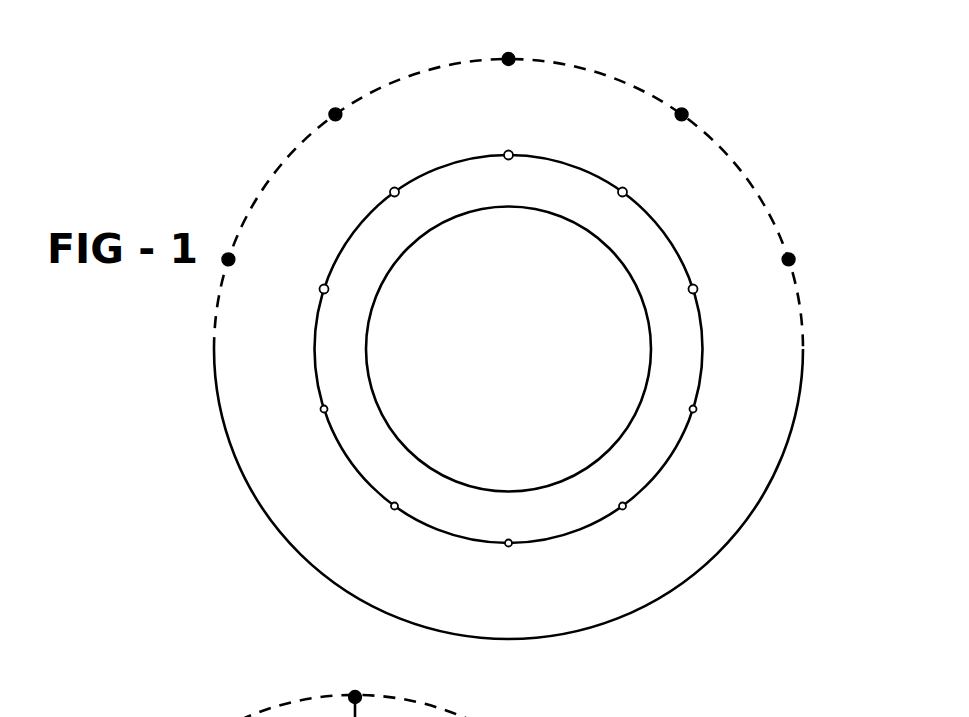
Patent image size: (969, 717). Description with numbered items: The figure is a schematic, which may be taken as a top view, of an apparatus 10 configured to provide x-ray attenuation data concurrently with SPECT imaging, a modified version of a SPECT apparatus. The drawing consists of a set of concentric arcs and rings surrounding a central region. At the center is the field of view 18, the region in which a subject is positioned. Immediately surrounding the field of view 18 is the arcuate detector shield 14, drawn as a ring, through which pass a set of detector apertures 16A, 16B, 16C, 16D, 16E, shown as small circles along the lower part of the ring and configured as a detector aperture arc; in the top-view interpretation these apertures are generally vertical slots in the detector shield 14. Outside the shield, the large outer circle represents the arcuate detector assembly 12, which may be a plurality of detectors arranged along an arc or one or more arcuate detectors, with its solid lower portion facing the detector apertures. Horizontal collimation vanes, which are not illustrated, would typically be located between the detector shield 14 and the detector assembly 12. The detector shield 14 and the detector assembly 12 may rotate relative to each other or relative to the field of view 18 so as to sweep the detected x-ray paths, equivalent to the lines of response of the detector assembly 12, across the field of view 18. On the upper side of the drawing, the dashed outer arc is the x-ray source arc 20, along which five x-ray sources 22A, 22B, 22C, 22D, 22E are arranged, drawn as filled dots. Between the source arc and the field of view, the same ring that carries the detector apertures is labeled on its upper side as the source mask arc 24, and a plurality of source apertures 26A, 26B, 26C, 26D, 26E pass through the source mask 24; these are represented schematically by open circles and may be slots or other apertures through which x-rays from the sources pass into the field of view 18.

The apparatus 10 is at (262, 99).
The arcuate detector assembly 12 is at (735, 540).
The arcuate detector shield 14 is at (458, 538).
The detector aperture 16A is at (321, 412).
The detector aperture 16B is at (392, 507).
The detector aperture 16C is at (510, 546).
The detector aperture 16D is at (624, 509).
The detector aperture 16E is at (696, 412).
The field of view 18 is at (405, 450).
The x-ray source arc 20 is at (590, 70).
The x-ray source 22A is at (228, 257).
The x-ray source 22B is at (335, 112).
The x-ray source 22C is at (509, 57).
The x-ray source 22D is at (683, 113).
The x-ray source 22E is at (789, 258).
The source mask arc 24 is at (547, 162).
The source aperture 26A is at (322, 286).
The source aperture 26B is at (392, 189).
The source aperture 26C is at (507, 151).
The source aperture 26D is at (626, 192).
The source aperture 26E is at (696, 286).